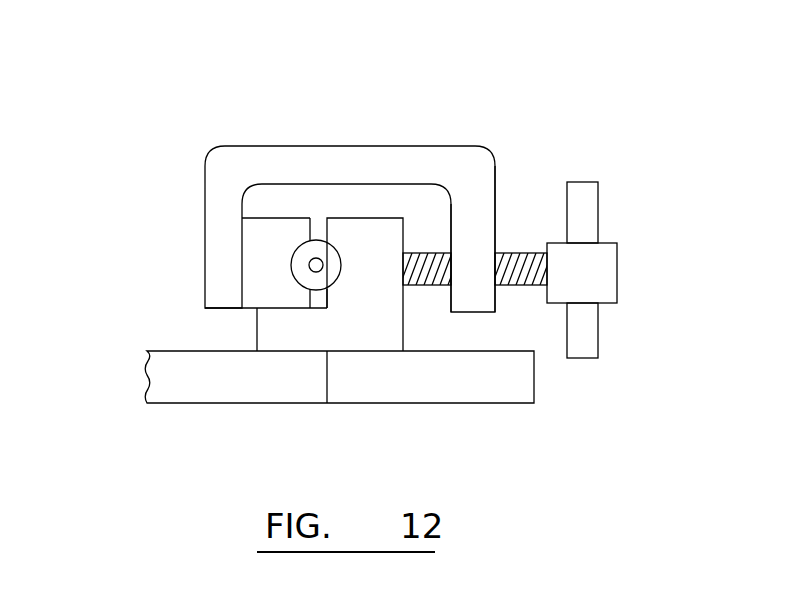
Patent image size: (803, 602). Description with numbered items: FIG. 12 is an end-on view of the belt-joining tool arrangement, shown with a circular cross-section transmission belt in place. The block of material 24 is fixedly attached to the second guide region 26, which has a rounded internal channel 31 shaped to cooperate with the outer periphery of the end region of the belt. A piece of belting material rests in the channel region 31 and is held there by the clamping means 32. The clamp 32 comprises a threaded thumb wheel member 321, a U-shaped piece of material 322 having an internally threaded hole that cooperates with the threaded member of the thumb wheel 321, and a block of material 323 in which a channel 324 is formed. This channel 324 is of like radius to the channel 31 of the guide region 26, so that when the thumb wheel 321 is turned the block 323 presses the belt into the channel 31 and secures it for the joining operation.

The clamping means 32 is at (285, 124).
The U-shaped piece of material 322 is at (496, 187).
The block of material 323 is at (260, 283).
The channel 324 is at (291, 263).
The internal channel 31 is at (334, 287).
The second guide region 26 is at (372, 242).
The threaded thumb wheel member 321 is at (605, 268).
The block of material 24 is at (450, 382).